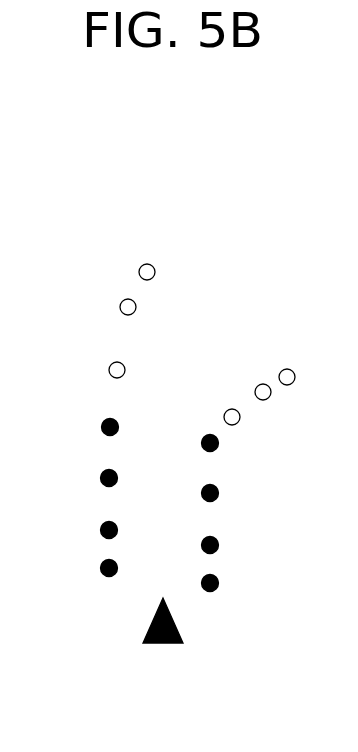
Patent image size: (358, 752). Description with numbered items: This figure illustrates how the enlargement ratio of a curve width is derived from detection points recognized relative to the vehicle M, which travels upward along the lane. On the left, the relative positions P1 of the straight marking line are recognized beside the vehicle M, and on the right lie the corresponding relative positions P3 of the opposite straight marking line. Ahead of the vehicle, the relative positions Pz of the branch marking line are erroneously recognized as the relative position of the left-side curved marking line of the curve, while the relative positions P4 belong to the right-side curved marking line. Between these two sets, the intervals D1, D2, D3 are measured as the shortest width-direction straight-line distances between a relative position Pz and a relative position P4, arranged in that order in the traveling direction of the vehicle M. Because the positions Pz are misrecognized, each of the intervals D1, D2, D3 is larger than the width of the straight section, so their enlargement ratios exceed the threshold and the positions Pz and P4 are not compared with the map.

The relative positions of the branch marking line Pz is at (110, 366).
The relative positions of the right-side curved marking line P4 is at (240, 418).
The relative positions of the straight marking line P1 is at (103, 562).
The third position group P3 is at (217, 577).
The interval D1 is at (223, 413).
The interval D2 is at (253, 386).
The interval D3 is at (278, 370).
The vehicle M is at (163, 645).